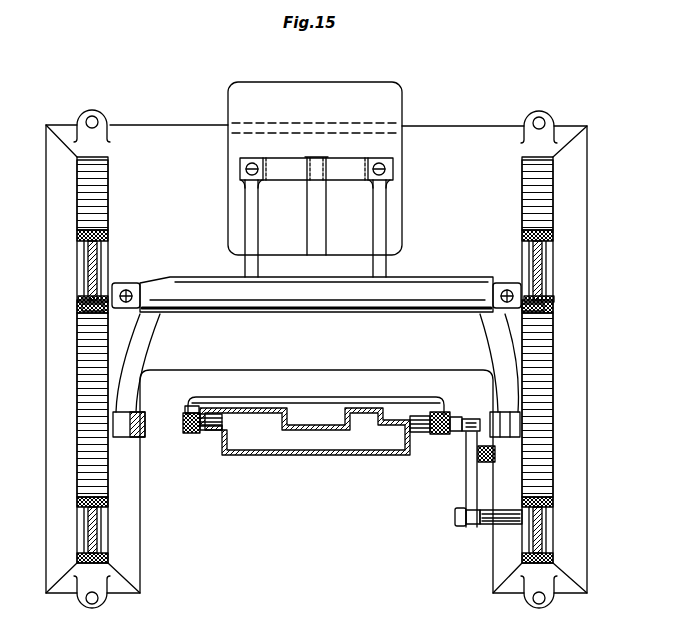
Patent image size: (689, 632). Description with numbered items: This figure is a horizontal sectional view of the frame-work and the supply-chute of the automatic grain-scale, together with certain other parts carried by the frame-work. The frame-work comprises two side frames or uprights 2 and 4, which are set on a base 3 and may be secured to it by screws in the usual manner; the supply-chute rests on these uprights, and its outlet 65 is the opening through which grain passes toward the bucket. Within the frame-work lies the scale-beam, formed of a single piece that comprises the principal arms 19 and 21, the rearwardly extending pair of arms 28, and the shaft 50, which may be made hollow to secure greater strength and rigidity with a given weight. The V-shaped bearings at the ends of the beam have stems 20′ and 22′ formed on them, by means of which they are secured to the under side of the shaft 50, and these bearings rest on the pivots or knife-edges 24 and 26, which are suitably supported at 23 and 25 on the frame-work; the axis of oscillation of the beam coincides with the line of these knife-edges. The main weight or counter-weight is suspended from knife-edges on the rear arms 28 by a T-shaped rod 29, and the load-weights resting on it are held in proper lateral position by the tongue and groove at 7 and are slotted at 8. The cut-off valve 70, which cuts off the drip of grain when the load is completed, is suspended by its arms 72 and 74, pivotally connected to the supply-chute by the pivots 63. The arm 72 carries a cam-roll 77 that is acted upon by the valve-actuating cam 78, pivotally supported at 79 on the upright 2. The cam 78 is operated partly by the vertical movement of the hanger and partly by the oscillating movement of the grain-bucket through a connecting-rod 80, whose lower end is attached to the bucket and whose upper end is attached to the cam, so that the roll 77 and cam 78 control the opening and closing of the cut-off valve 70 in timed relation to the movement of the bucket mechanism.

The upright 2 is at (545, 366).
The base 3 is at (160, 137).
The upright 4 is at (90, 373).
The tongue and groove 7 is at (373, 122).
The slot 8 is at (318, 224).
The principal arm 19 is at (491, 338).
The stem 20′ is at (504, 290).
The principal arm 21 is at (136, 340).
The stem 22′ is at (127, 288).
The support 23 is at (553, 314).
The knife-edge 24 is at (548, 306).
The support 25 is at (94, 308).
The knife-edge 26 is at (86, 300).
The arm 28 is at (250, 230).
The T-shaped rod 29 is at (336, 170).
The shaft 50 is at (216, 296).
The pivot 63 is at (185, 430).
The outlet 65 is at (320, 445).
The cut-off valve 70 is at (336, 400).
The arm 72 is at (443, 411).
The arm 74 is at (189, 410).
The cam-roll 77 is at (473, 418).
The cam 78 is at (466, 486).
The pivot 79 is at (456, 518).
The connecting-rod 80 is at (470, 456).